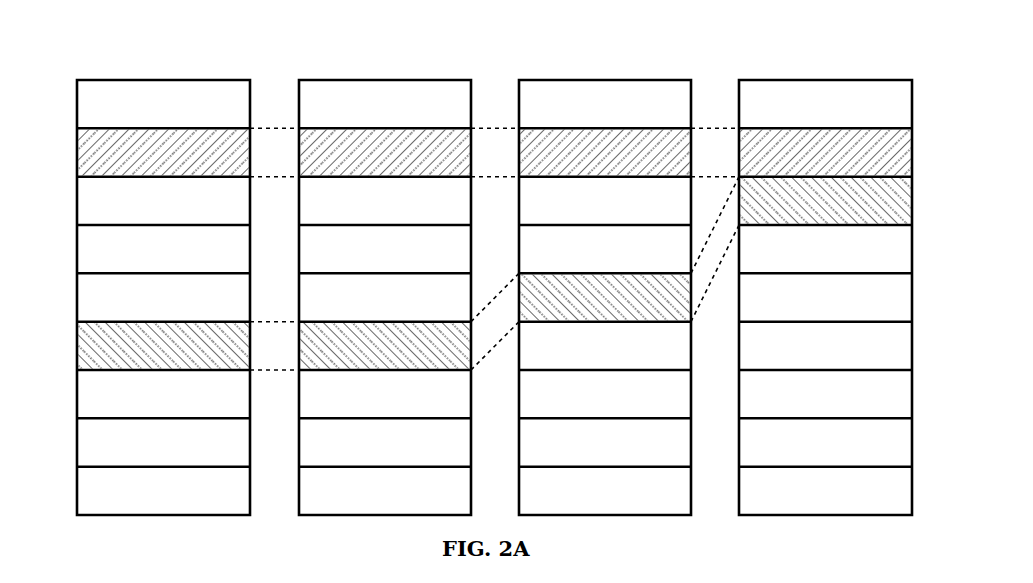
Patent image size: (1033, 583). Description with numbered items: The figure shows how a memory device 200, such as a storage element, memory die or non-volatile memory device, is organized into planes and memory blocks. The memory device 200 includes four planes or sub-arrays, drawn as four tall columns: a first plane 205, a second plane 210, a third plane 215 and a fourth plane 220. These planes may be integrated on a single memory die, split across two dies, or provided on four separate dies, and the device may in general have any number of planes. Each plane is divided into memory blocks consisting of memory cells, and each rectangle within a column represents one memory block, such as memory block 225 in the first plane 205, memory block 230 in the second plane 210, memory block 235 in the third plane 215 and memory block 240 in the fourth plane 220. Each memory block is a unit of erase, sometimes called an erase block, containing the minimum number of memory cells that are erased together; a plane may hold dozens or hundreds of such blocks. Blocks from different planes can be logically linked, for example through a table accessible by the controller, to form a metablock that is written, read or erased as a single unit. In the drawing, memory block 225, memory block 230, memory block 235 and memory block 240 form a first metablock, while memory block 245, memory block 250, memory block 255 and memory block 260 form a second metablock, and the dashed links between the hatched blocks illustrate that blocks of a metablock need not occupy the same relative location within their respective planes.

The memory device 200 is at (68, 61).
The first plane 205 is at (157, 79).
The second plane 210 is at (382, 79).
The third plane 215 is at (592, 79).
The fourth plane 220 is at (822, 79).
The memory block 225 is at (78, 150).
The memory block 230 is at (298, 150).
The memory block 235 is at (518, 150).
The memory block 240 is at (738, 150).
The memory block 245 is at (78, 346).
The memory block 250 is at (298, 346).
The memory block 255 is at (518, 287).
The memory block 260 is at (913, 190).